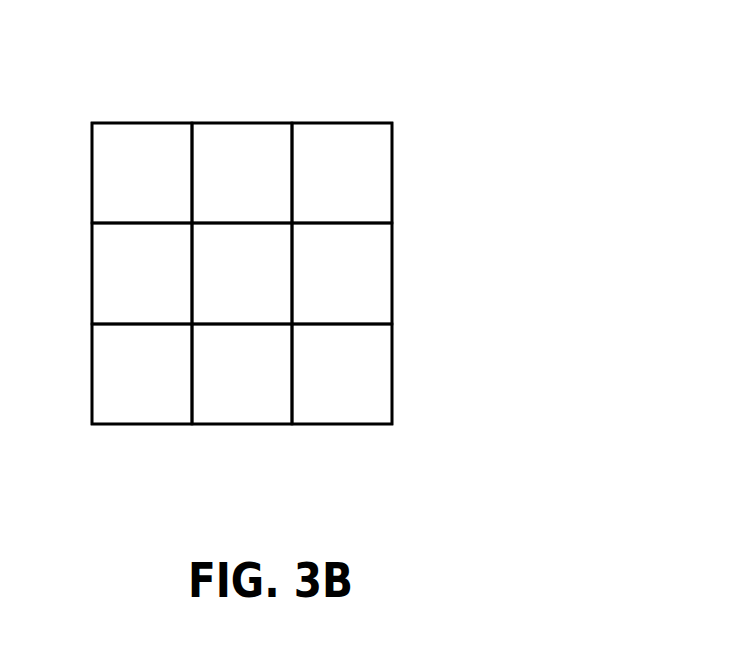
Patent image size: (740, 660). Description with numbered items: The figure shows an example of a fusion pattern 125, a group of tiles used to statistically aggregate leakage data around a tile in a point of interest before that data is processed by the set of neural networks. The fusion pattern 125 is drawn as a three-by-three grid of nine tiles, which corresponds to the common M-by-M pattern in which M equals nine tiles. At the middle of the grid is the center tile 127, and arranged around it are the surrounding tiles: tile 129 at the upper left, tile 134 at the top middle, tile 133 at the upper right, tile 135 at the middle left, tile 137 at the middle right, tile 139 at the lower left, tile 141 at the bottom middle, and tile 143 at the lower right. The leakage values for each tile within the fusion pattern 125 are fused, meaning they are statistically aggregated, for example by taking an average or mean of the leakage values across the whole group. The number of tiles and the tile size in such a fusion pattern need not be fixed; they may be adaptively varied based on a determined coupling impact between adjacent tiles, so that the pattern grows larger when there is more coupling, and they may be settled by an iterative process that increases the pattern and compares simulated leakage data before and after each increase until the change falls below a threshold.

The fusion pattern 125 is at (333, 83).
The center tile 127 is at (252, 260).
The tile 129 is at (113, 180).
The tile 133 is at (377, 178).
The top-middle cell of fusion pattern 134 is at (236, 148).
The tile 135 is at (108, 280).
The tile 137 is at (372, 297).
The tile 139 is at (138, 407).
The tile 141 is at (242, 407).
The tile 143 is at (338, 408).